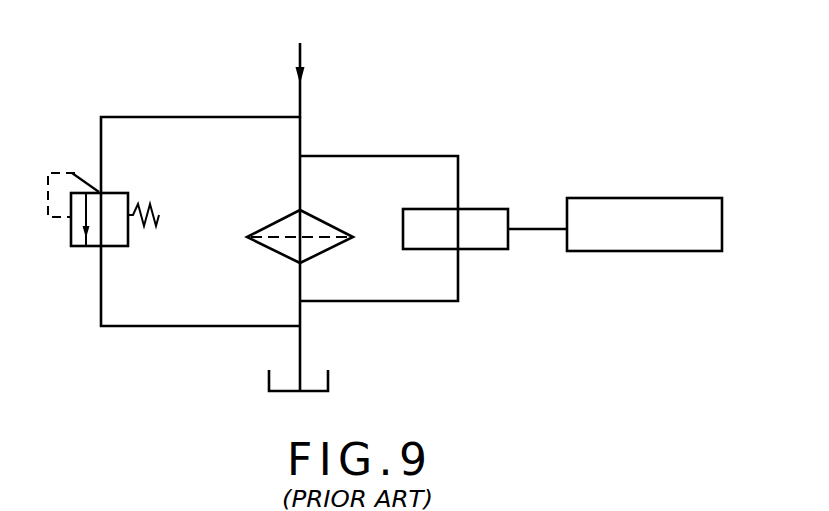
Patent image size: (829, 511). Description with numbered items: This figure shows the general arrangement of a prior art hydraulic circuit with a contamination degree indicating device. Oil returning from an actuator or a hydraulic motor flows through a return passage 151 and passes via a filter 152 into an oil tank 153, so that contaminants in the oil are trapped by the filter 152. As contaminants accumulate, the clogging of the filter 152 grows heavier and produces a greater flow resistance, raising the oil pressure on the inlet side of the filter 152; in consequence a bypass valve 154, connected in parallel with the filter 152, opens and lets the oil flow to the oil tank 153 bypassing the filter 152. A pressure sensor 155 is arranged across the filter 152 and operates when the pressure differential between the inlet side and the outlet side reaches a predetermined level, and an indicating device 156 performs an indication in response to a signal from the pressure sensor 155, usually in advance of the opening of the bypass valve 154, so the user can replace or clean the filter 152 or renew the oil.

The return passage 151 is at (301, 99).
The filter 152 is at (275, 221).
The oil tank 153 is at (330, 379).
The bypass valve 154 is at (85, 247).
The pressure sensor 155 is at (503, 208).
The indicating device 156 is at (647, 198).